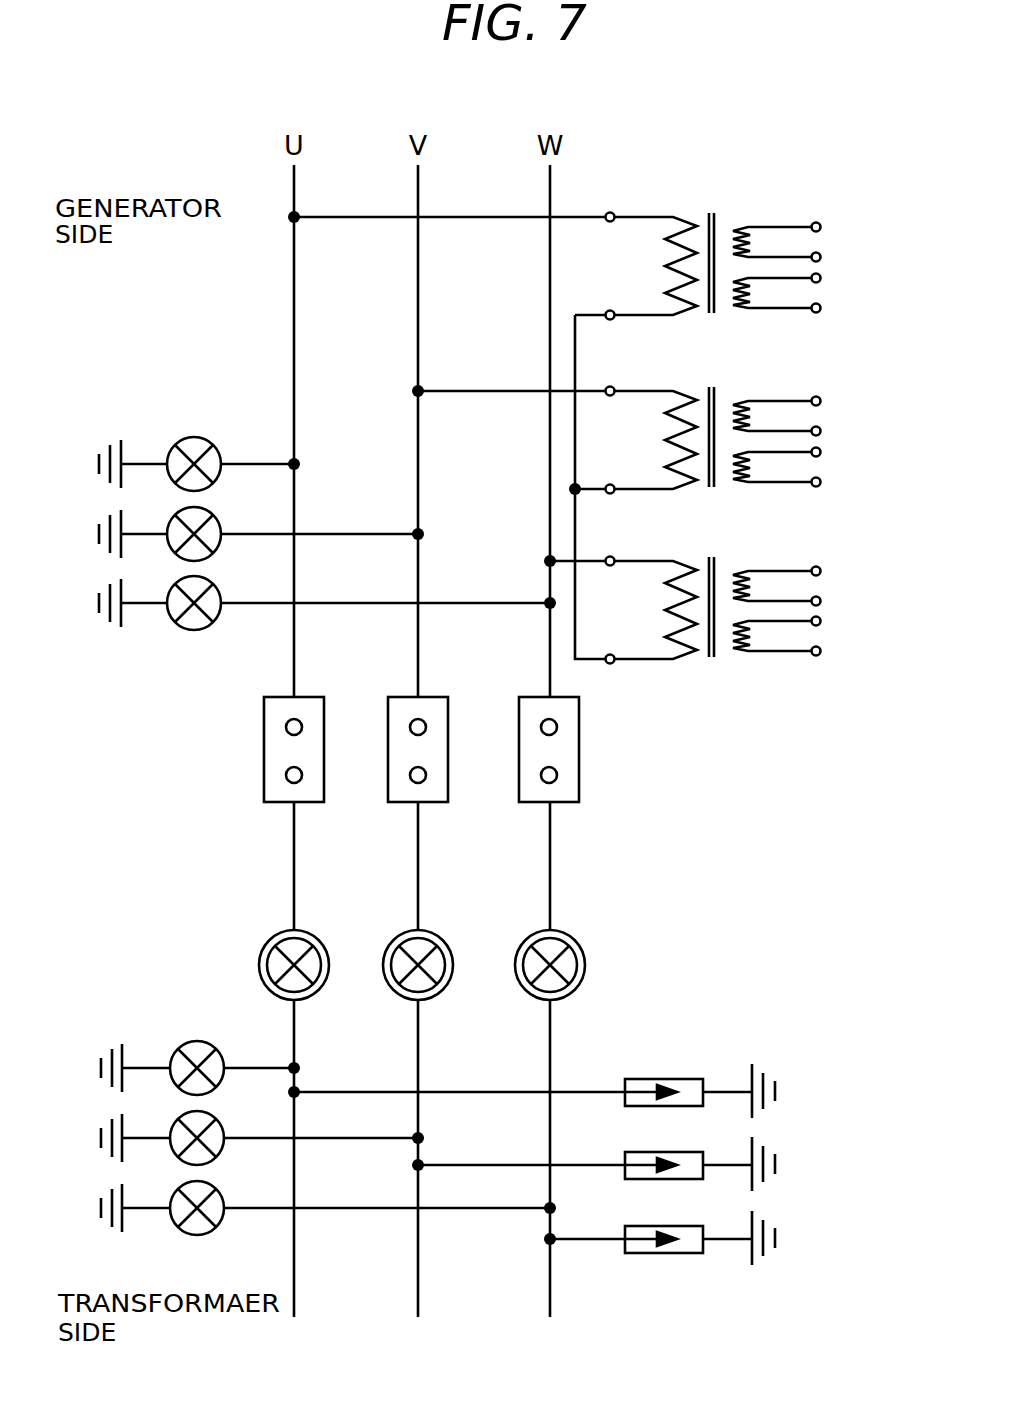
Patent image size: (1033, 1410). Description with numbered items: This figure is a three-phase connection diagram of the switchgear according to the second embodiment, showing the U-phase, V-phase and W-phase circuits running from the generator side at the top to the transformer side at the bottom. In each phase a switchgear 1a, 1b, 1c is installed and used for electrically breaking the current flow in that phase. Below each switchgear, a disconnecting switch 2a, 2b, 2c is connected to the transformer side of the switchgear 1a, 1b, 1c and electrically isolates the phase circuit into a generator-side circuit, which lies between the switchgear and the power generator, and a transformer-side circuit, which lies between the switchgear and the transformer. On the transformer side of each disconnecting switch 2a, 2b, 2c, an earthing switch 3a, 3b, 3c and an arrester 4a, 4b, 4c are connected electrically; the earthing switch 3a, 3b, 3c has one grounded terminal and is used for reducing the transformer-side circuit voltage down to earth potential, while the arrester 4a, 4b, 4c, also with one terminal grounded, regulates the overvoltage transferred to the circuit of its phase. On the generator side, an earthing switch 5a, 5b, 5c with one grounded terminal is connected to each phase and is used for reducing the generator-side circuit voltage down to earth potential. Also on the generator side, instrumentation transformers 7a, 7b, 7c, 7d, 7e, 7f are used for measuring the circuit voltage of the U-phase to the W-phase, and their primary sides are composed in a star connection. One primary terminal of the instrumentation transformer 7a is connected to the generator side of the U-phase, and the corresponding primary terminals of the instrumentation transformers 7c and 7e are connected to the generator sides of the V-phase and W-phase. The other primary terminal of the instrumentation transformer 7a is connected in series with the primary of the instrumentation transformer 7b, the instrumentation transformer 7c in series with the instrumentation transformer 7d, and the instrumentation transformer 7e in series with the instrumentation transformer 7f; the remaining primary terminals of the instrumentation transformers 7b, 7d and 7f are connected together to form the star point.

The switchgear 1a is at (308, 695).
The switchgear 1b is at (448, 695).
The switchgear 1c is at (580, 760).
The disconnecting switch 2a is at (303, 931).
The disconnecting switch 2b is at (427, 931).
The disconnecting switch 2c is at (558, 931).
The earthing switch 3a is at (225, 1051).
The earthing switch 3b is at (225, 1121).
The earthing switch 3c is at (225, 1191).
The arrester 4a is at (650, 1083).
The arrester 4b is at (650, 1156).
The arrester 4c is at (650, 1230).
The earthing switch 5a is at (220, 449).
The earthing switch 5b is at (220, 519).
The earthing switch 5c is at (220, 588).
The instrumentation transformer 7a is at (820, 245).
The instrumentation transformer 7b is at (820, 295).
The instrumentation transformer 7c is at (820, 419).
The instrumentation transformer 7d is at (820, 469).
The instrumentation transformer 7e is at (820, 589).
The instrumentation transformer 7f is at (820, 639).